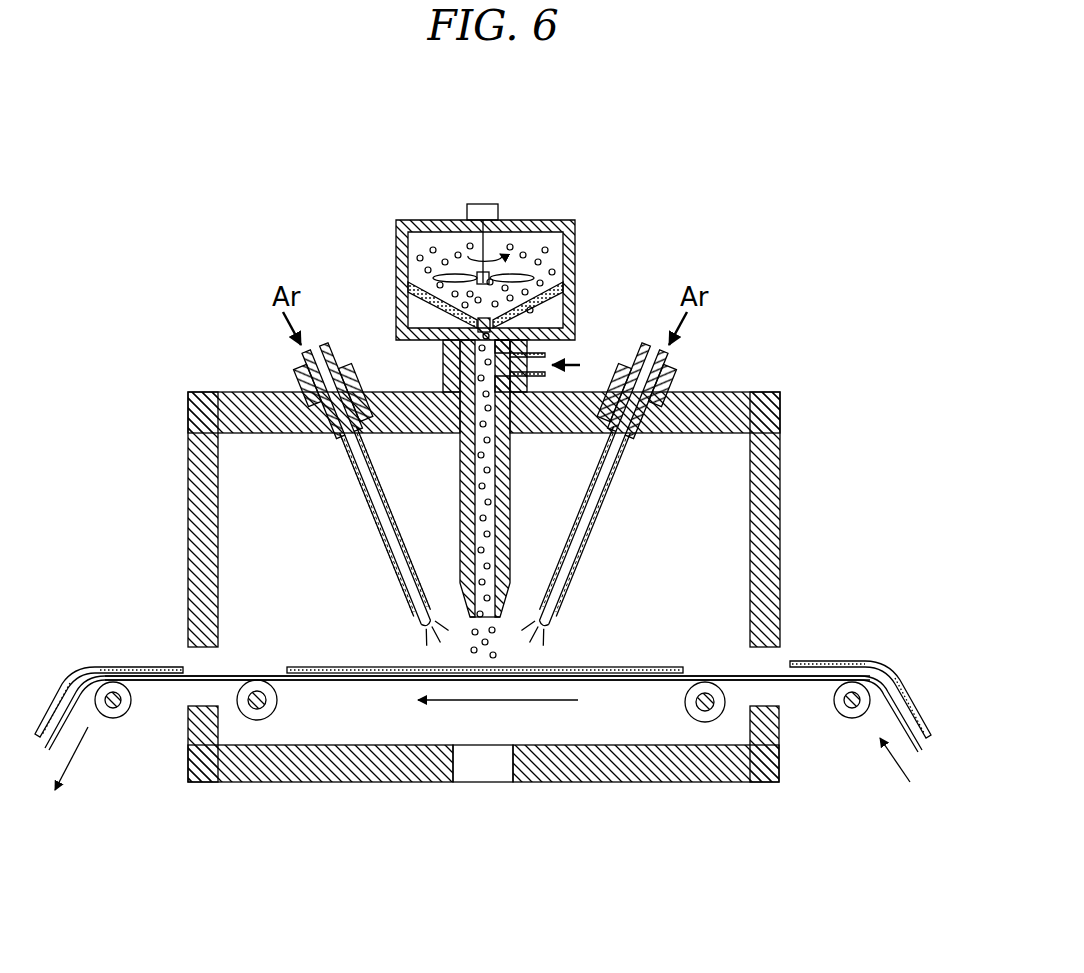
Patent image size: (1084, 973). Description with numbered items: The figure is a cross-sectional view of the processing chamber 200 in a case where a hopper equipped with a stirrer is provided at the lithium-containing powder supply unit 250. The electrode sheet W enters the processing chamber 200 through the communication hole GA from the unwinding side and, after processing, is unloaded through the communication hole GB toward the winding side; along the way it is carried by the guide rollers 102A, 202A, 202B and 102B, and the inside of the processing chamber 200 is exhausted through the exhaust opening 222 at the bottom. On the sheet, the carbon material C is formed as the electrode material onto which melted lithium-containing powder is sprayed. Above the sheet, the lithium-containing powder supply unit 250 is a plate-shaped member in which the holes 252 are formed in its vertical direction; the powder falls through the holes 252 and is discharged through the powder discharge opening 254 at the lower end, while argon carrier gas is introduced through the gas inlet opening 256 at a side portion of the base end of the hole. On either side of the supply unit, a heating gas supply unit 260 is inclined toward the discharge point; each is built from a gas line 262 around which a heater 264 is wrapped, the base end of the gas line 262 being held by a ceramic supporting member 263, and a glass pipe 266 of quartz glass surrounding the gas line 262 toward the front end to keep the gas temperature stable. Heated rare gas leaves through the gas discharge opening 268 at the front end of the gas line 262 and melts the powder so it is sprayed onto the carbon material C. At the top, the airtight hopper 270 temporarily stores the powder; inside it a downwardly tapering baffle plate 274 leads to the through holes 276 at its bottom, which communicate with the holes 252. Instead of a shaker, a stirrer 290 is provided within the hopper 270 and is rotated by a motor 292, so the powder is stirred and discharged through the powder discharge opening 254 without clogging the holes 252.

The processing chamber 200 is at (206, 98).
The exhaust opening 222 is at (480, 785).
The lithium-containing powder supply unit 250 is at (496, 478).
The holes 252 is at (497, 468).
The powder discharge opening 254 is at (503, 617).
The gas inlet opening 256 is at (560, 352).
The heating gas supply unit 260 is at (294, 380).
The gas line 262 is at (305, 352).
The supporting member 263 is at (296, 368).
The heater 264 is at (355, 482).
The glass pipe 266 is at (376, 532).
The gas discharge opening 268 is at (428, 626).
The hopper 270 is at (428, 229).
The baffle plate 274 is at (410, 286).
The through holes 276 is at (440, 318).
The stirrer 290 is at (440, 258).
The motor 292 is at (482, 204).
The guide roller 102A is at (851, 718).
The guide roller 102B is at (113, 718).
The guide roller 202A is at (705, 722).
The guide roller 202B is at (257, 720).
The carbon material C is at (118, 668).
The electrode sheet W is at (775, 676).
The communication hole GA is at (760, 693).
The communication hole GB is at (215, 695).